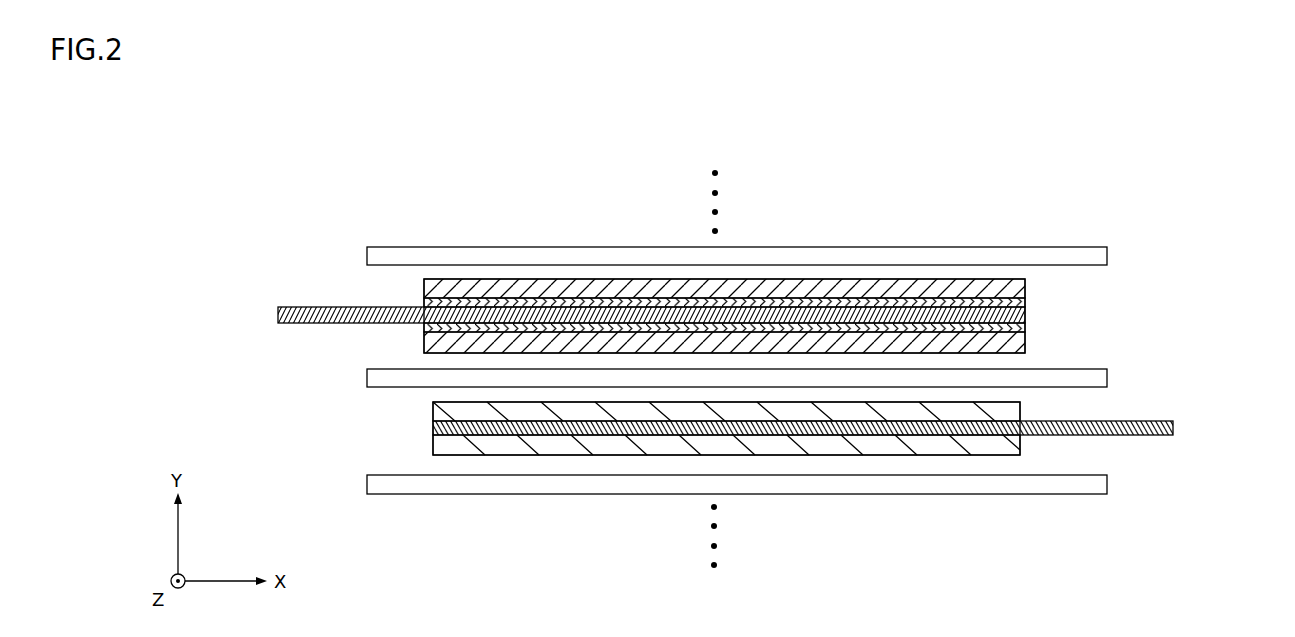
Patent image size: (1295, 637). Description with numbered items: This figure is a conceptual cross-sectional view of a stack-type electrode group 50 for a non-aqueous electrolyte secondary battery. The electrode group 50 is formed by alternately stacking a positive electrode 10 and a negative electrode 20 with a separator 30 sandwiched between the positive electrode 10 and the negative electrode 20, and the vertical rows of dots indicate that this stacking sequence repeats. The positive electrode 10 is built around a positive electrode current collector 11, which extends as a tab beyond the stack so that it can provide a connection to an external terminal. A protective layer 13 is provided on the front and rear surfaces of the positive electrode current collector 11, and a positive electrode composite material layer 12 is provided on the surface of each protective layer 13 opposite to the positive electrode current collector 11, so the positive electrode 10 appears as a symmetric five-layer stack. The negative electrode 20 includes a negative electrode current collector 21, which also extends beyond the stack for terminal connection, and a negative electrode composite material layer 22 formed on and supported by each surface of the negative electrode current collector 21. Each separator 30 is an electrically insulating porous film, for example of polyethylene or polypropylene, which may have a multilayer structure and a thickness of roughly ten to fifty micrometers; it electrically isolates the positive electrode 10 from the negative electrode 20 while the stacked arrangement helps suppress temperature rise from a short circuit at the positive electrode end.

The electrode group 50 is at (405, 162).
The positive electrode 10 is at (783, 306).
The positive electrode current collector 11 is at (1025, 313).
The positive electrode composite material layer 12 is at (1025, 288).
The protective layer 13 is at (1025, 302).
The negative electrode 20 is at (861, 430).
The negative electrode current collector 21 is at (1173, 430).
The negative electrode composite material layer 22 is at (1020, 412).
The separator 30 is at (365, 257).